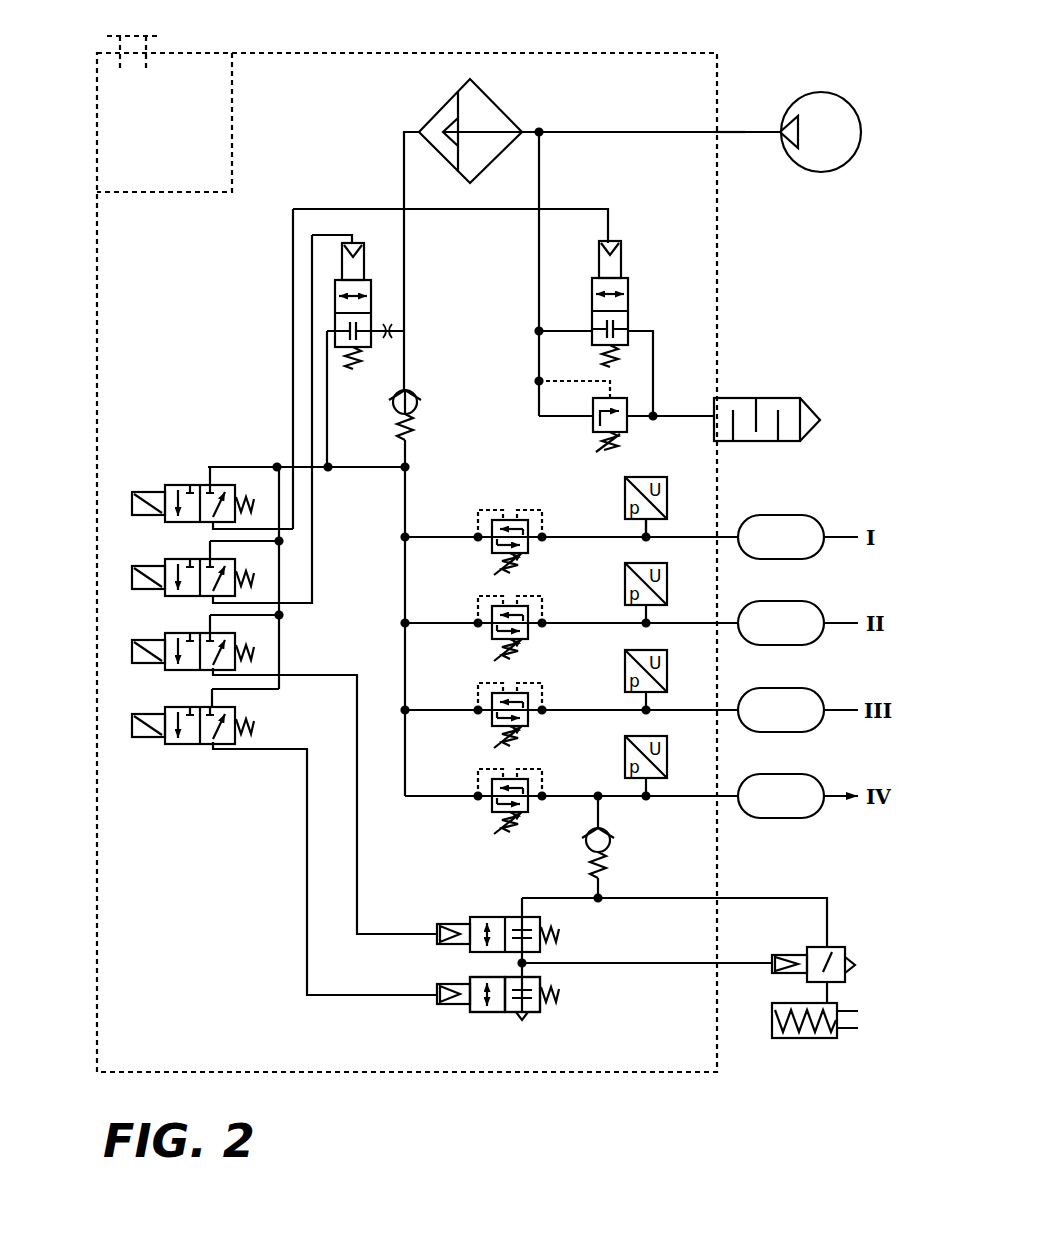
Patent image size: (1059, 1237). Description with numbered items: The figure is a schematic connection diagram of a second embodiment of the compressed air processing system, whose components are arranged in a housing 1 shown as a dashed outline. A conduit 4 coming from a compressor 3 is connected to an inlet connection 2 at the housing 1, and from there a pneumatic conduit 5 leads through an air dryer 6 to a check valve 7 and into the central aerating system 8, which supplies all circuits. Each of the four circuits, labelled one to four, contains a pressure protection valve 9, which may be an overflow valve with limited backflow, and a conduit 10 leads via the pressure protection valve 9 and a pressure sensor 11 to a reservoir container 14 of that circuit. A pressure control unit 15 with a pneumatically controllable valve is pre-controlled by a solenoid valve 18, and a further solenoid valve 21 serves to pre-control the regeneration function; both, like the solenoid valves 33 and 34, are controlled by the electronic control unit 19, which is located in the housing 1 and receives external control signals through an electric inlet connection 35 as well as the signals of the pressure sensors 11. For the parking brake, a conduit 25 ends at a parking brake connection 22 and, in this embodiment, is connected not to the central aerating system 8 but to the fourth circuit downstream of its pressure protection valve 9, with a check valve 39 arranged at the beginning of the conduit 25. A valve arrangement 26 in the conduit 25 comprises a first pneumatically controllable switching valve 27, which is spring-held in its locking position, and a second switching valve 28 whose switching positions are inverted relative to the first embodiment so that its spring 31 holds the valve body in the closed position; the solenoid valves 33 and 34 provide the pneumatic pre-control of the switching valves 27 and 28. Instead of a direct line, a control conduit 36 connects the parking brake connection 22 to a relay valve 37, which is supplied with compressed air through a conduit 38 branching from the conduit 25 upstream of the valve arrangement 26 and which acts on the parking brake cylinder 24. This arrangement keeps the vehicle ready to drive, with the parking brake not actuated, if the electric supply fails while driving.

The housing 1 is at (352, 50).
The inlet connection 2 is at (713, 131).
The compressor 3 is at (820, 128).
The conduit 4 is at (745, 131).
The pneumatic conduit 5 is at (406, 130).
The air dryer 6 is at (493, 100).
The check valve 7 is at (418, 414).
The central aerating system 8 is at (408, 566).
The pressure protection valve 9 is at (510, 516).
The conduit 10 is at (567, 533).
The pressure sensor 11 is at (677, 500).
The reservoir container 14 is at (780, 527).
The pressure control unit 15 is at (640, 296).
The solenoid valve 18 is at (130, 503).
The electronic control unit 19 is at (130, 155).
The solenoid valve 21 is at (130, 578).
The parking brake connection 22 is at (720, 964).
The parking brake cylinder 24 is at (820, 1040).
The conduit 25 is at (667, 902).
The valve arrangement 26 is at (418, 1012).
The first switching valve 27 is at (440, 954).
The second switching valve 28 is at (486, 1020).
The spring 31 is at (545, 1012).
The solenoid valve 33 is at (130, 650).
The solenoid valve 34 is at (130, 722).
The electric inlet connection 35 is at (131, 33).
The control conduit 36 is at (741, 965).
The relay valve 37 is at (825, 962).
The conduit 38 is at (766, 899).
The check valve 39 is at (612, 852).